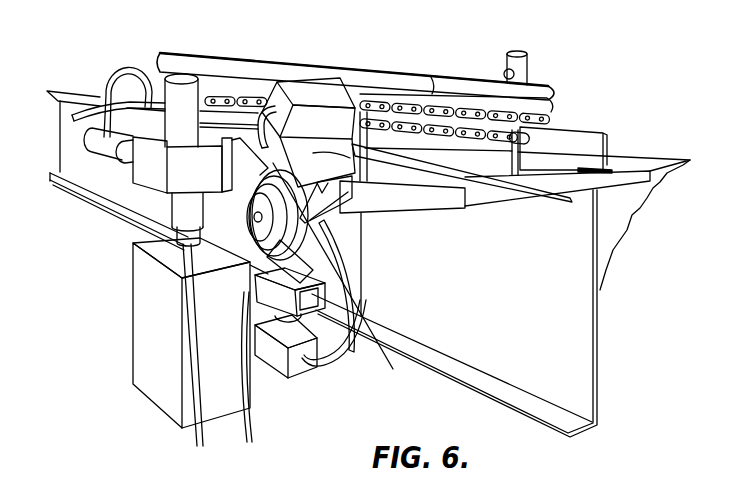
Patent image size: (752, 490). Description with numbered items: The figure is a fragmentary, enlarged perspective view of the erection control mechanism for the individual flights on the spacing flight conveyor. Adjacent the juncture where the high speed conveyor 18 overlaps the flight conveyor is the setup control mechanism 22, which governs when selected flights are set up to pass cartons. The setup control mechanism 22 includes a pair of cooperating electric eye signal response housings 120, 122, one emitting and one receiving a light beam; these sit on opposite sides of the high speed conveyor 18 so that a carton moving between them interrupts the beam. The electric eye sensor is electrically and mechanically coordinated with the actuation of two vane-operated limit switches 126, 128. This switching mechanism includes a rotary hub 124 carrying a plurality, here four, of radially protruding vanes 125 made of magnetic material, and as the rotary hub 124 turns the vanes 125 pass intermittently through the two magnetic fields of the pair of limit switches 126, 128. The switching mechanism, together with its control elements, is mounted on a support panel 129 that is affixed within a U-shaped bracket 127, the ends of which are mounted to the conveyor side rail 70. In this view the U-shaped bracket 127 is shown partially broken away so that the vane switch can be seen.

The high speed conveyor 18 is at (533, 119).
The setup control mechanism 22 is at (307, 88).
The conveyor side rail 70 is at (572, 268).
The electric eye signal response housing 120 is at (184, 92).
The electric eye signal response housing 122 is at (528, 60).
The rotary hub 124 is at (343, 281).
The vanes 125 is at (310, 298).
The vane-operated limit switch 126 is at (278, 353).
The U-shaped bracket 127 is at (150, 152).
The vane-operated limit switch 128 is at (348, 158).
The support panel 129 is at (157, 303).